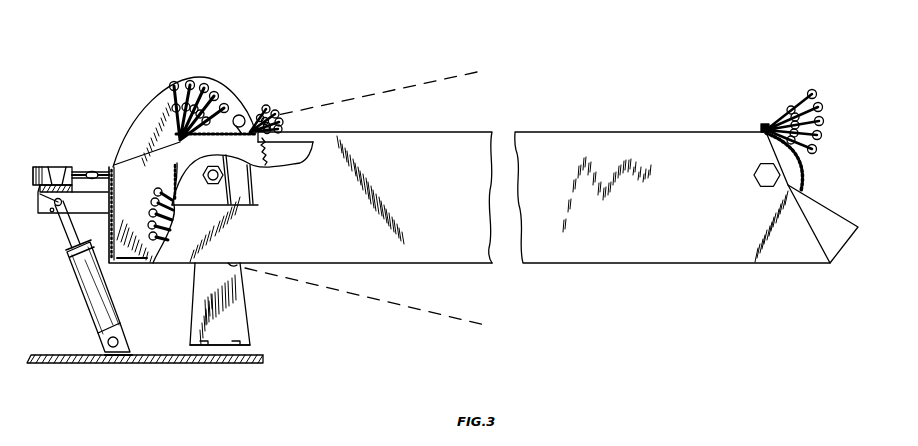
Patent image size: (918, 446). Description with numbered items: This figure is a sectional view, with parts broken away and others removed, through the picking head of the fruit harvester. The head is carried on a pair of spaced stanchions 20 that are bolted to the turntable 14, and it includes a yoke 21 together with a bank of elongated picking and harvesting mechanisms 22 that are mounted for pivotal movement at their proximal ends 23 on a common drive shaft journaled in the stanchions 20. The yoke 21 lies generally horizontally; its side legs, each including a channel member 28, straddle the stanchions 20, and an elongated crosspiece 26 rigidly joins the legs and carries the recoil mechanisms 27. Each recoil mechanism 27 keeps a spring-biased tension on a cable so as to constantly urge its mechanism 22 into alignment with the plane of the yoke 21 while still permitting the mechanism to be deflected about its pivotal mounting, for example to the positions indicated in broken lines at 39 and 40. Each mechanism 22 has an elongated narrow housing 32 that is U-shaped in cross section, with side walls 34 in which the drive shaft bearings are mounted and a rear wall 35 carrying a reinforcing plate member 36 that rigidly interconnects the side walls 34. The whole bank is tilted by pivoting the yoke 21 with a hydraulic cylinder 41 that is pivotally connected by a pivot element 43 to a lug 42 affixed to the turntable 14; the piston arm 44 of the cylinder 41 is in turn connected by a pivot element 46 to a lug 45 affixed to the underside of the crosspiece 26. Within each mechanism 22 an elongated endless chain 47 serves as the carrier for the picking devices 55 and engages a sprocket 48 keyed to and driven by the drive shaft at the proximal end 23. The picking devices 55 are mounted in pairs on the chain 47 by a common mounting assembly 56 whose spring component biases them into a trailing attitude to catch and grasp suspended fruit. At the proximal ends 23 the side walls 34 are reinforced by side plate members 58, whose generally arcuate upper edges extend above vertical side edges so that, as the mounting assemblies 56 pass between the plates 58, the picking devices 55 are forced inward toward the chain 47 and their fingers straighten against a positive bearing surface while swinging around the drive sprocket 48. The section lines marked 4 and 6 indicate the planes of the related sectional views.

The section line 4- 4 is at (102, 33).
The section line 6- 6 is at (552, 110).
The turntable 14 is at (263, 355).
The stanchions 20 is at (193, 297).
The yoke 21 is at (40, 205).
The picking and harvesting mechanisms 22 is at (695, 263).
The proximal ends 23 is at (237, 265).
The crosspiece 26 is at (45, 167).
The recoil mechanisms 27 is at (65, 167).
The channel member 28 is at (88, 247).
The housing 32 is at (652, 215).
The side walls 34 is at (787, 263).
The rear wall 35 is at (114, 193).
The reinforcing plate member 36 is at (116, 164).
The deflected position 39 is at (450, 320).
The deflected position 40 is at (421, 82).
The hydraulic cylinder 41 is at (84, 303).
The lug 42 is at (103, 350).
The pivot element 43 is at (128, 356).
The piston arm 44 is at (67, 250).
The lug 45 is at (52, 213).
The pivot element 46 is at (62, 206).
The endless chain 47 is at (808, 166).
The sprocket 48 is at (265, 160).
The picking devices 55 is at (198, 78).
The mounting assembly 56 is at (242, 116).
The side plate members 58 is at (150, 97).